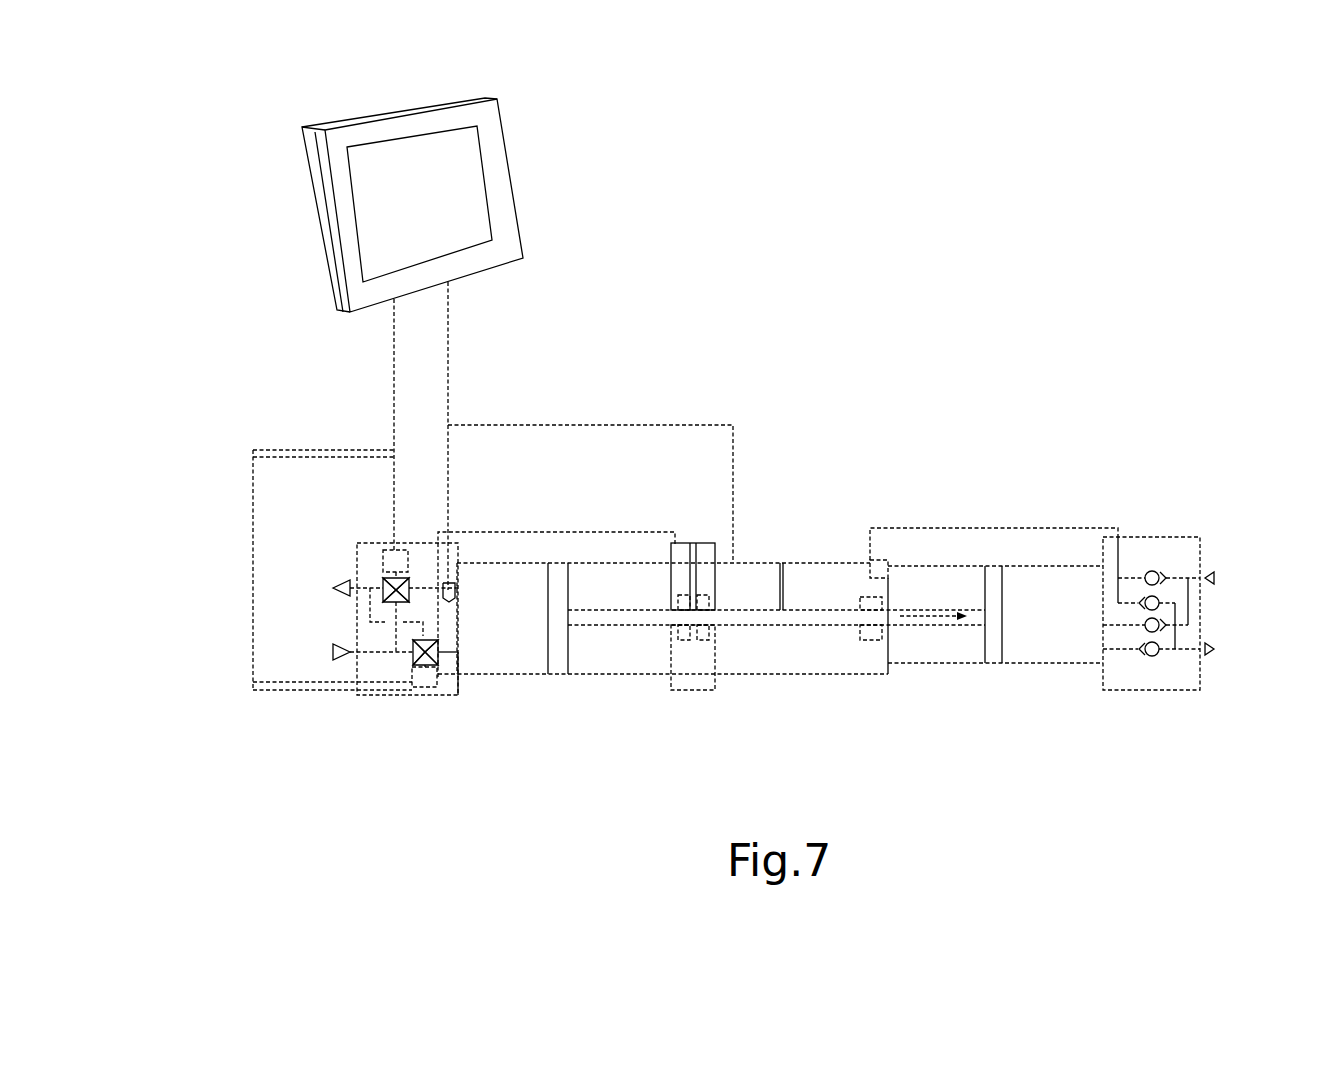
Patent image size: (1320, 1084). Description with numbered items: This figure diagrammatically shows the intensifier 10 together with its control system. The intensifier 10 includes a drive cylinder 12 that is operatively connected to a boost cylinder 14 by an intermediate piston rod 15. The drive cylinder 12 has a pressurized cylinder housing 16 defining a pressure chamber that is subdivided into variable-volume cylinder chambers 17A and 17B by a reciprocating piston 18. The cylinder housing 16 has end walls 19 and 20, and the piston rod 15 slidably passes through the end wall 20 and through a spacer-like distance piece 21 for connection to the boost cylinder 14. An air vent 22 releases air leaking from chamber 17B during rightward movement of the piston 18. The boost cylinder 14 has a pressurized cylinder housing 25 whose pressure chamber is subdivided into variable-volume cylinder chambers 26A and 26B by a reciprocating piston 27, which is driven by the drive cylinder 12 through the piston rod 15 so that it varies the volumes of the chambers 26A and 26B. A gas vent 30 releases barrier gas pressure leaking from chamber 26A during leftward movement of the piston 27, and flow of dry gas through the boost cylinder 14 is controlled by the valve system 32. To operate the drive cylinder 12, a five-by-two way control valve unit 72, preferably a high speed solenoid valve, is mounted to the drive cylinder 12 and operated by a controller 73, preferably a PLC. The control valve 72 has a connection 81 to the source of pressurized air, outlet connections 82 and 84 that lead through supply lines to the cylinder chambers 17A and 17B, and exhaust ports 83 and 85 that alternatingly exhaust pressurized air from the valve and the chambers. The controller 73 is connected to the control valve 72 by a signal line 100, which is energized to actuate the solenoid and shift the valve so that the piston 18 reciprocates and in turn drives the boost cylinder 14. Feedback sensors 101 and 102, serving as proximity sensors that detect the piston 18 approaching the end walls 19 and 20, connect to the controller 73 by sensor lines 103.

The intensifier 10 is at (388, 752).
The drive cylinder 12 is at (569, 702).
The boost cylinder 14 is at (1002, 680).
The piston rod 15 is at (743, 660).
The cylinder housing 16 is at (522, 563).
The cylinder chamber 17A is at (500, 655).
The cylinder chamber 17B is at (640, 660).
The piston 18 is at (558, 563).
The end wall 19 is at (453, 590).
The end wall 20 is at (693, 682).
The distance piece 21 is at (797, 672).
The air vent 22 is at (689, 576).
The cylinder housing 25 is at (1085, 668).
The cylinder chamber 26A is at (915, 675).
The cylinder chamber 26B is at (1070, 665).
The piston 27 is at (988, 565).
The gas vent 30 is at (785, 562).
The valve system 32 is at (1182, 505).
The control valve unit 72 is at (345, 703).
The controller 73 is at (523, 200).
The connection 81 is at (337, 653).
The outlet connection 82 is at (447, 680).
The exhaust port 83 is at (384, 622).
The outlet connection 84 is at (423, 583).
The exhaust port 85 is at (377, 585).
The signal line 100 is at (394, 368).
The feedback sensor 101 is at (462, 590).
The feedback sensor 102 is at (690, 578).
The sensor line 103 is at (448, 352).